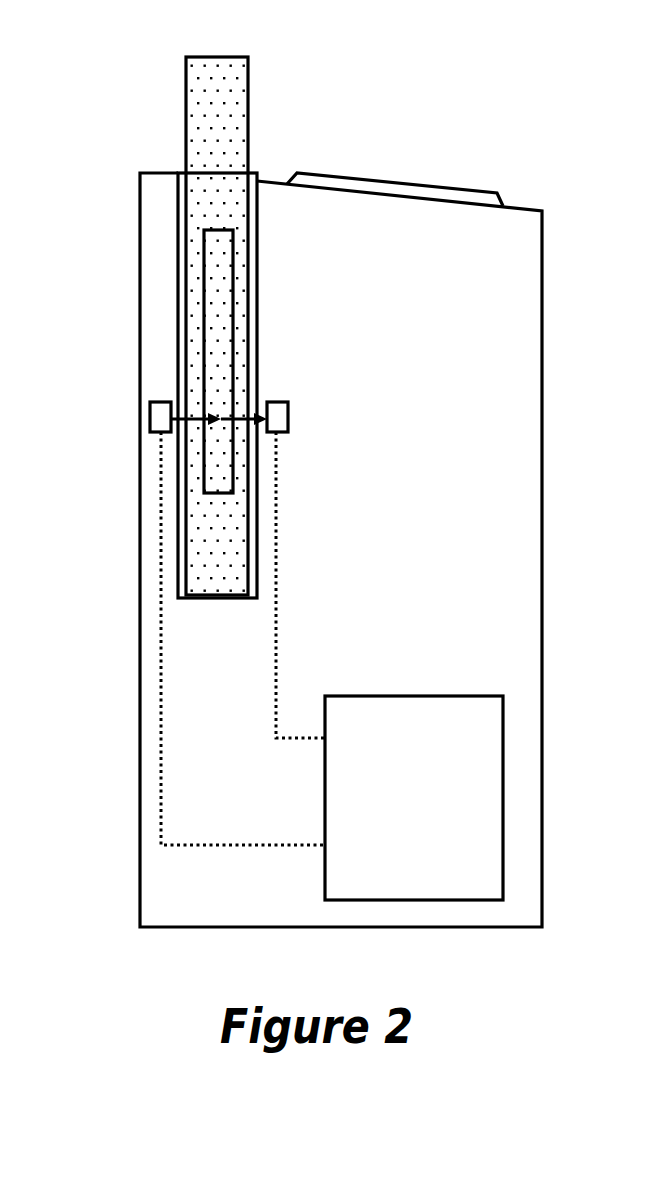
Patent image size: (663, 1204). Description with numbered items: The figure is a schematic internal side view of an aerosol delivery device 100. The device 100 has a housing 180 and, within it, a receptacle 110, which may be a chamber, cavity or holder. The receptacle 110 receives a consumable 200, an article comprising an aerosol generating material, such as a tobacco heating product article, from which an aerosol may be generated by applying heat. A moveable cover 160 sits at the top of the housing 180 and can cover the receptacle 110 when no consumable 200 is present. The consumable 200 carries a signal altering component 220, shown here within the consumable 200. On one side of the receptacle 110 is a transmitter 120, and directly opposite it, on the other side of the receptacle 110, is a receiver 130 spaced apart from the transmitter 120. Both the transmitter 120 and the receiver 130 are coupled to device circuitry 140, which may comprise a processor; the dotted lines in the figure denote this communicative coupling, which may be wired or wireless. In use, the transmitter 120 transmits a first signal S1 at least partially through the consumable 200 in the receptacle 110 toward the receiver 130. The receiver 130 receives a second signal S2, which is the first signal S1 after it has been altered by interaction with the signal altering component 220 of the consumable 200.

The aerosol delivery device 100 is at (386, 77).
The receptacle 110 is at (224, 175).
The transmitter 120 is at (150, 420).
The receiver 130 is at (288, 412).
The device circuitry 140 is at (412, 696).
The cover 160 is at (447, 188).
The housing 180 is at (140, 683).
The consumable 200 is at (205, 113).
The signal altering component 220 is at (234, 268).
The first signal S1 is at (198, 415).
The second signal S2 is at (243, 415).